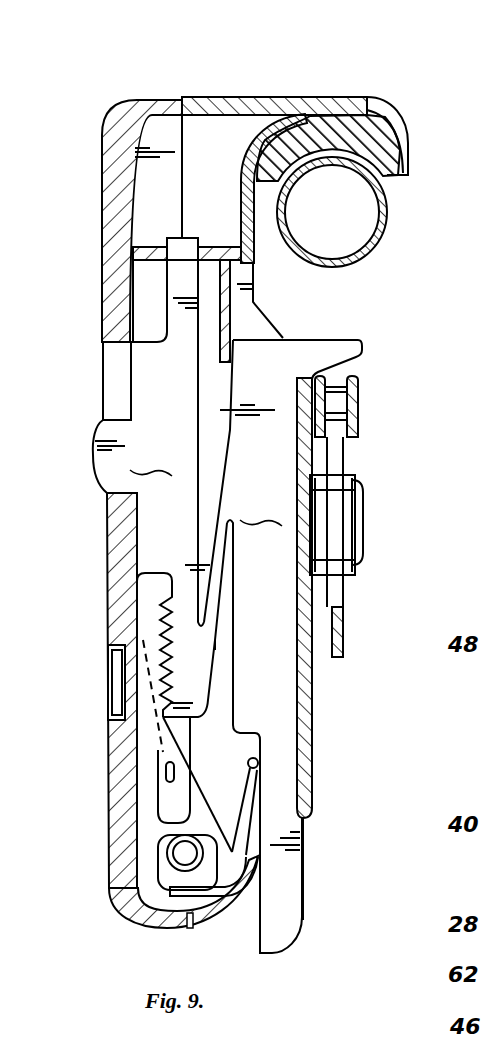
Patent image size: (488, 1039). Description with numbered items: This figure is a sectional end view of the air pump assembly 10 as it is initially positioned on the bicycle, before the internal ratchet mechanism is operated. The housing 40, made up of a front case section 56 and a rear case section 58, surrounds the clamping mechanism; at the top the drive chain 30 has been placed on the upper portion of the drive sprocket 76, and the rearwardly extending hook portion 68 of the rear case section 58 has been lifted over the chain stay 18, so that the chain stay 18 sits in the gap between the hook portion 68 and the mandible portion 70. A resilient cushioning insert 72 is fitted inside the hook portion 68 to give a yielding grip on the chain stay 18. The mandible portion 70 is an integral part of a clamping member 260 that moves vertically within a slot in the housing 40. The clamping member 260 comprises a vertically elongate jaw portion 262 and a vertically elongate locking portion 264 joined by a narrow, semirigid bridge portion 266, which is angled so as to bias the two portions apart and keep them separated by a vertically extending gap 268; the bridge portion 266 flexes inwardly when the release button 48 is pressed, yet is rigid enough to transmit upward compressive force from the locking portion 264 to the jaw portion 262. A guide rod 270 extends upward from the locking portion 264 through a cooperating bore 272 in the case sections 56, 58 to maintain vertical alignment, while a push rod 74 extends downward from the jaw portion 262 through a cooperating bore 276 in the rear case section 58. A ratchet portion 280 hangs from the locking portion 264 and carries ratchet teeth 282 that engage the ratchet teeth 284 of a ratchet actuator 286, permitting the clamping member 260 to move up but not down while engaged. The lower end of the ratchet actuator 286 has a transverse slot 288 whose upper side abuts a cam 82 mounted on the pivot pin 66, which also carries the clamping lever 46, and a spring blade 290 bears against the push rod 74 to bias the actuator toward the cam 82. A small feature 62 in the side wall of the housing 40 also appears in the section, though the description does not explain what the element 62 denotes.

The air pump assembly 10 is at (244, 86).
The chain stay 18 is at (388, 205).
The drive chain 30 is at (358, 397).
The housing 40 is at (110, 516).
The clamping lever 46 is at (118, 722).
The release button 48 is at (95, 449).
The front case section 56 is at (117, 120).
The rear case section 58 is at (277, 97).
The wall slot 62 is at (109, 660).
The pivot pin 66 is at (170, 860).
The hook portion 68 is at (388, 108).
The mandible portion 70 is at (361, 345).
The cushioning insert 72 is at (378, 147).
The push rod 74 is at (282, 840).
The drive sprocket 76 is at (345, 603).
The cam 82 is at (150, 905).
The clamping member 260 is at (124, 372).
The jaw portion 262 is at (232, 606).
The locking portion 264 is at (167, 432).
The bridge portion 266 is at (217, 588).
The vertically extending gap 268 is at (220, 395).
The guide rod 270 is at (178, 248).
The cooperating bore 272 is at (168, 252).
The cooperating bore 276 is at (262, 873).
The ratchet portion 280 is at (173, 690).
The ratchet teeth 282 is at (167, 672).
The ratchet teeth 284 is at (160, 627).
The ratchet actuator 286 is at (157, 752).
The transverse slot 288 is at (168, 855).
The spring blade 290 is at (250, 795).